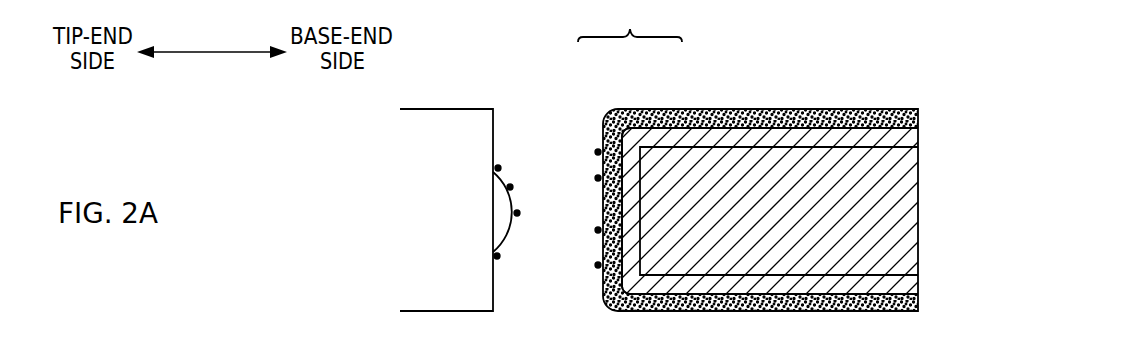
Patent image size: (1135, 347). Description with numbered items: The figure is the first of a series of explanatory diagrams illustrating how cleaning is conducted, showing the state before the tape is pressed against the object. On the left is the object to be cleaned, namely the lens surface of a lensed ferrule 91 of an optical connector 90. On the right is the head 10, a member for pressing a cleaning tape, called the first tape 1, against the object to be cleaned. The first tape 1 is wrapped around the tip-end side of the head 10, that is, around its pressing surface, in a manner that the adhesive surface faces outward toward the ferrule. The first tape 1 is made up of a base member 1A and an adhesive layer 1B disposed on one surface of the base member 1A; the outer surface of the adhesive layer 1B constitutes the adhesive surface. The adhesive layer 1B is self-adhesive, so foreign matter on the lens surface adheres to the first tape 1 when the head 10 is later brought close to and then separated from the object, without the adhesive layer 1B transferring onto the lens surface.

The optical connector 90 is at (437, 86).
The lensed ferrule 91 is at (494, 129).
The first tape 1 is at (630, 21).
The base member 1A is at (660, 133).
The adhesive layer 1B is at (602, 133).
The head 10 is at (842, 167).